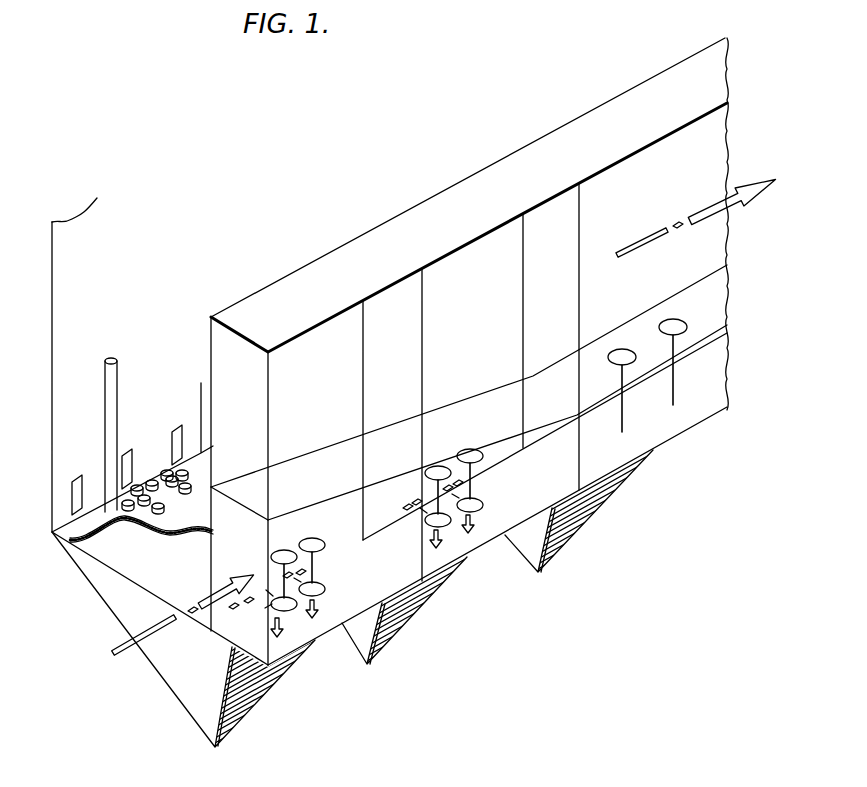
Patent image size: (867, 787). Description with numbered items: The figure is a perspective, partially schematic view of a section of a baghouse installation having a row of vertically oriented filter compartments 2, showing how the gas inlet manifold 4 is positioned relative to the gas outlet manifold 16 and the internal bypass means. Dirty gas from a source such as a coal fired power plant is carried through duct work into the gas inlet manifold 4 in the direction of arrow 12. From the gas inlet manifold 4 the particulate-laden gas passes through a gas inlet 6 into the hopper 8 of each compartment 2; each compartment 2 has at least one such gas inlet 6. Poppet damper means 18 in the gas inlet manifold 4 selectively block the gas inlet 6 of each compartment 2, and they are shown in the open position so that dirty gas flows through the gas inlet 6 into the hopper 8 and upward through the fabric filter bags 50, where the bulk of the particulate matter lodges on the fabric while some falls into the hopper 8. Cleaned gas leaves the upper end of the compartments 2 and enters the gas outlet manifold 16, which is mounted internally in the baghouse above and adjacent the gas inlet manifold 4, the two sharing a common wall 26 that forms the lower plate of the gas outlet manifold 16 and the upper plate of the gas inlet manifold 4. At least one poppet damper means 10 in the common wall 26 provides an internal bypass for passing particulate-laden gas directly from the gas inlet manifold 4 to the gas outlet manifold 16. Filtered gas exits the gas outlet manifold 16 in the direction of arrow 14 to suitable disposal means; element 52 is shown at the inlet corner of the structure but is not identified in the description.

The filter compartment 2 is at (141, 407).
The gas inlet manifold 4 is at (332, 530).
The gas inlet 6 is at (330, 597).
The hopper 8 is at (190, 689).
The poppet damper means 10 is at (618, 348).
The arrow 12 is at (207, 588).
The arrow 14 is at (731, 229).
The gas outlet manifold 16 is at (299, 394).
The poppet damper means 18 is at (304, 539).
The common wall 26 is at (237, 474).
The filter bags 50 is at (106, 375).
The inlet conveyor 52 is at (72, 531).